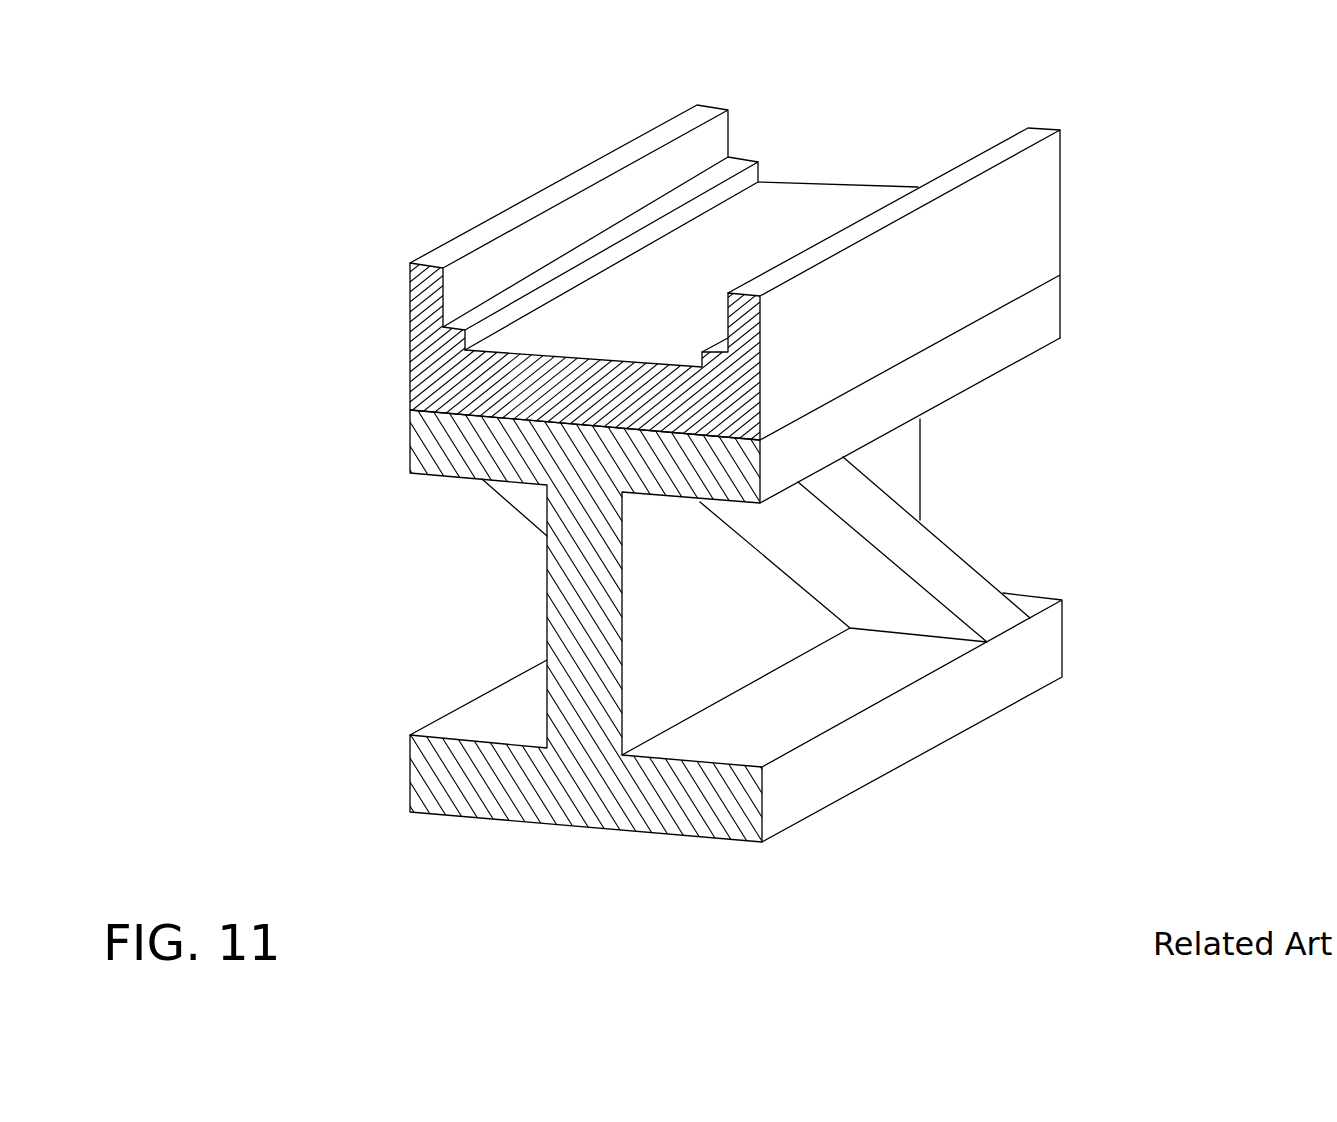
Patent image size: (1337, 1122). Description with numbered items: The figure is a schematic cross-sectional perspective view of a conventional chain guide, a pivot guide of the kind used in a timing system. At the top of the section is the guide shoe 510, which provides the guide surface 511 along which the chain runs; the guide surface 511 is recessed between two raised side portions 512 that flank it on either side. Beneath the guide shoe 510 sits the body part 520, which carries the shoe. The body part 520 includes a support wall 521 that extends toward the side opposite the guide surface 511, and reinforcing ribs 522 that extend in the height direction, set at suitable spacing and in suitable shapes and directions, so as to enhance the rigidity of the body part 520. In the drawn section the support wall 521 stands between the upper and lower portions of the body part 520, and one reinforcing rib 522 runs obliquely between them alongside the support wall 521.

The guide shoe 510 is at (488, 397).
The guide surface 511 is at (735, 258).
The side wall (flange) of rail 512 is at (500, 223).
The body part 520 is at (528, 787).
The support wall 521 is at (715, 577).
The reinforcing ribs 522 is at (928, 555).